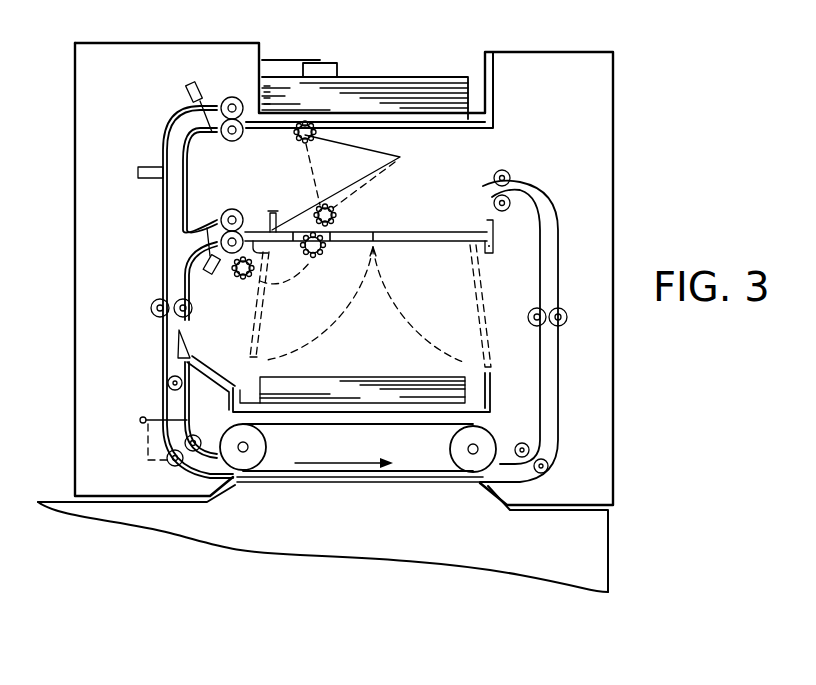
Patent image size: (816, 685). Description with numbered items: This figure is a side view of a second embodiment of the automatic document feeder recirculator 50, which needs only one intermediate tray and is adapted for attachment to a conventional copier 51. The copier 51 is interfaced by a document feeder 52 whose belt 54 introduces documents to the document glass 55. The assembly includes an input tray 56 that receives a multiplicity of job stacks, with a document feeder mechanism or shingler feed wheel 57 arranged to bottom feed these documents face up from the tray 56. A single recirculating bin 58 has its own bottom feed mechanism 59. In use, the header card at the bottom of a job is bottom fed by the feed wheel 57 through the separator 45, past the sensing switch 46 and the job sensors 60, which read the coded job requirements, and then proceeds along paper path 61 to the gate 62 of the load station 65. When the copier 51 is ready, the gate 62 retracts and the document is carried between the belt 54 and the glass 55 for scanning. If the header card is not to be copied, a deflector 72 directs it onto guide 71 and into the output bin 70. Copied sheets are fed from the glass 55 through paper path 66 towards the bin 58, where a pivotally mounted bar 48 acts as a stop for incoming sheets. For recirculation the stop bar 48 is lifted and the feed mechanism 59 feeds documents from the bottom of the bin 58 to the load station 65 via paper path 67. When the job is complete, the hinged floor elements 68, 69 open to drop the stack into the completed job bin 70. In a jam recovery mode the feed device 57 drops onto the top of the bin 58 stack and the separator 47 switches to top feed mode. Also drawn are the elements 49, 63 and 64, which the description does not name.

The separator 45 is at (234, 94).
The sensing switch 46 is at (188, 91).
The separator 47 is at (233, 206).
The pivotally mounted bar 48 is at (270, 215).
The sensor 49 is at (209, 274).
The automatic document feeder recirculator 50 is at (530, 52).
The copier 51 is at (608, 535).
The document feeder 52 is at (492, 432).
The belt 54 is at (282, 473).
The document glass 55 is at (402, 483).
The input tray 56 is at (405, 70).
The document feeder mechanism 57 is at (296, 142).
The recirculating bin 58 is at (411, 210).
The bottom feed mechanism 59 is at (323, 252).
The job sensors 60 is at (138, 170).
The paper path 61 is at (175, 218).
The gate 62 is at (383, 151).
The roller 63 is at (172, 466).
The cover 64 is at (280, 60).
The load station 65 is at (170, 378).
The paper path 66 is at (548, 222).
The paper path 67 is at (197, 246).
The hinged floor element 68 is at (338, 319).
The hinged floor element 69 is at (398, 321).
The output bin 70 is at (346, 376).
The guide 71 is at (229, 374).
The deflector 72 is at (180, 353).